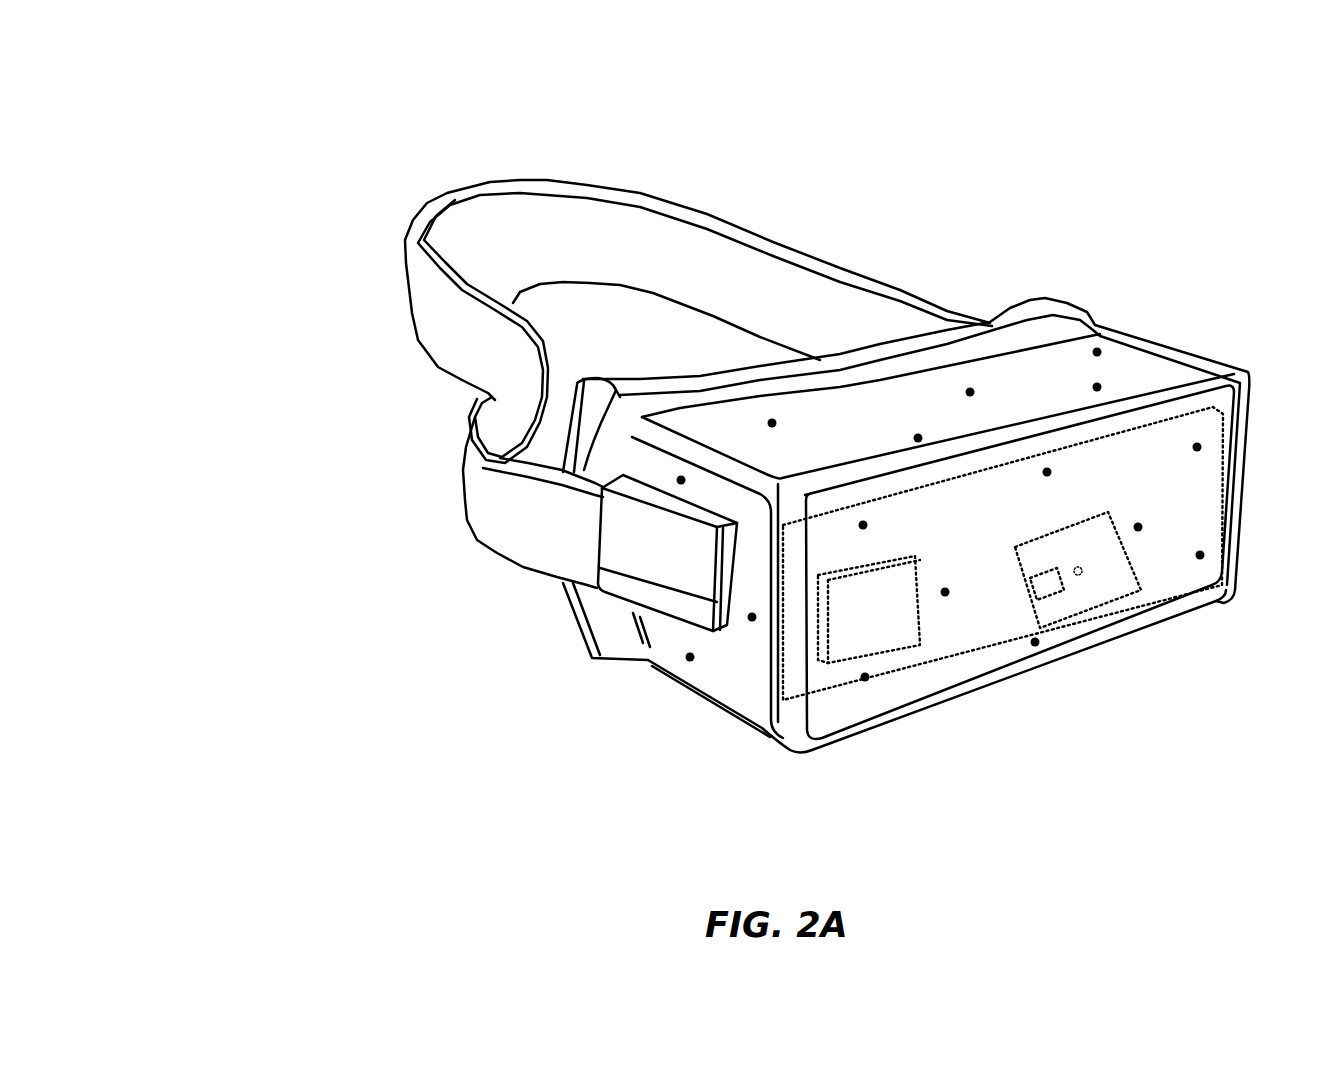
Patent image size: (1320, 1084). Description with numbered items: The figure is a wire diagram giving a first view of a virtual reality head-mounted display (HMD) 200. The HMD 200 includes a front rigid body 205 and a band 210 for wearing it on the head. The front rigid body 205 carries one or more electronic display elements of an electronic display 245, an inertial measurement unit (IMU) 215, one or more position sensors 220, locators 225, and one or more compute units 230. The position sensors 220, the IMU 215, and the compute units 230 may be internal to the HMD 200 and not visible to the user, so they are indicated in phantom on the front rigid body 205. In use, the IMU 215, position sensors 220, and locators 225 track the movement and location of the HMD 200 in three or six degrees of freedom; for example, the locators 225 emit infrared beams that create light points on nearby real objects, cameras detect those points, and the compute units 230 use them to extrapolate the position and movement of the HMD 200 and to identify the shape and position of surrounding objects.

The virtual reality head-mounted display (HMD) 200 is at (270, 152).
The front rigid body 205 is at (803, 750).
The band 210 is at (410, 316).
The inertial measurement unit (IMU) 215 is at (1018, 557).
The position sensors 220 is at (1047, 590).
The locators 225 is at (912, 440).
The compute units 230 is at (873, 565).
The electronic display 245 is at (1223, 497).